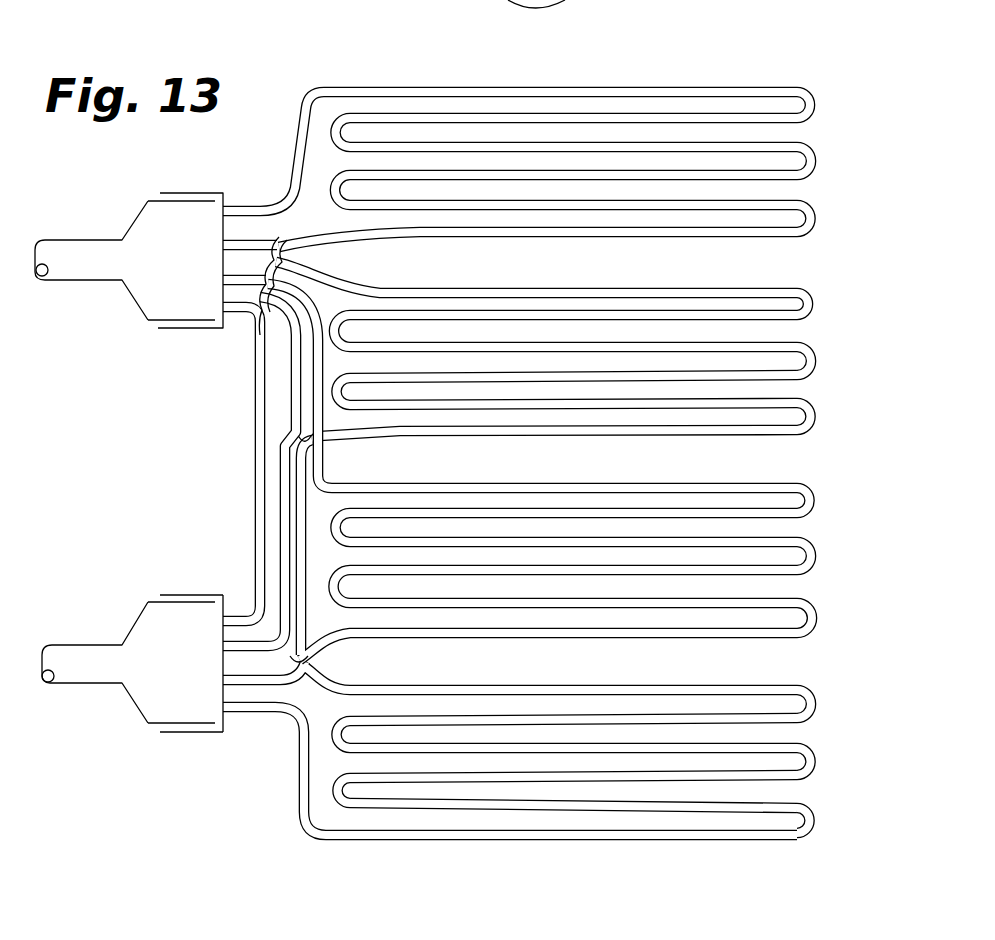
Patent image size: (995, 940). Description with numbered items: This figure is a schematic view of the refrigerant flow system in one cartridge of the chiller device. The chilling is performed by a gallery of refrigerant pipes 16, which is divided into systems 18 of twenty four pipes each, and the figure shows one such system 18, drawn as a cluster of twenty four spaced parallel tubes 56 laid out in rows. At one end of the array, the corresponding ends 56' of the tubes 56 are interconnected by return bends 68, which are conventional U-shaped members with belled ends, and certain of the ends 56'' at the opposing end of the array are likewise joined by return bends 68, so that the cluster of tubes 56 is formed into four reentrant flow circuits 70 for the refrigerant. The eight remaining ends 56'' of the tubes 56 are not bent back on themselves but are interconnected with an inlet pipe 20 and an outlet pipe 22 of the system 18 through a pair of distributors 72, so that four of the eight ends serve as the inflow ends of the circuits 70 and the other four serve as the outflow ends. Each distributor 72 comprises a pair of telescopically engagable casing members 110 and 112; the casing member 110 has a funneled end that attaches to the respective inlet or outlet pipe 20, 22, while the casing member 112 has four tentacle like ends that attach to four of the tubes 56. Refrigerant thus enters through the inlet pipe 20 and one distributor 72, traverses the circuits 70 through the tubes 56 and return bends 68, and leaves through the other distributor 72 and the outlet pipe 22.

The refrigerant pipes 16 is at (690, 133).
The system of pipes 18 is at (150, 395).
The inlet pipe 20 is at (62, 266).
The outlet pipe 22 is at (65, 673).
The tubes 56 is at (573, 112).
The corresponding ends of the tubes 56' is at (551, 413).
The ends of the tubes 56'' is at (510, 542).
The return bends 68 is at (340, 779).
The reentrant flow circuits 70 is at (800, 74).
The distributors 72 is at (116, 218).
The casing member 110 is at (129, 706).
The casing member 112 is at (187, 593).